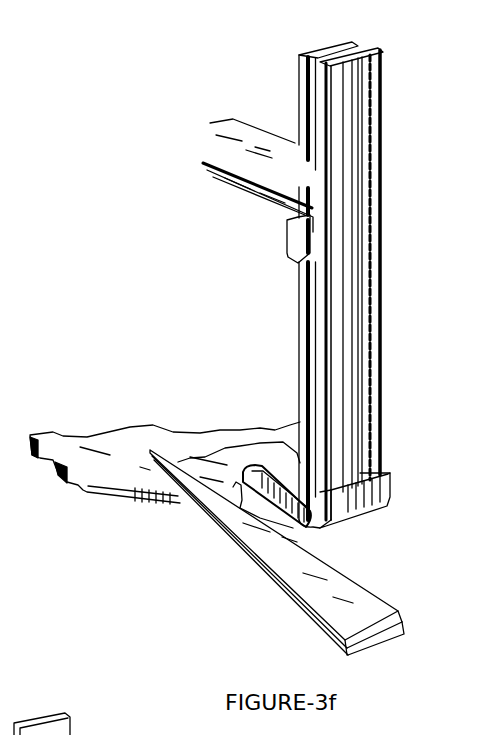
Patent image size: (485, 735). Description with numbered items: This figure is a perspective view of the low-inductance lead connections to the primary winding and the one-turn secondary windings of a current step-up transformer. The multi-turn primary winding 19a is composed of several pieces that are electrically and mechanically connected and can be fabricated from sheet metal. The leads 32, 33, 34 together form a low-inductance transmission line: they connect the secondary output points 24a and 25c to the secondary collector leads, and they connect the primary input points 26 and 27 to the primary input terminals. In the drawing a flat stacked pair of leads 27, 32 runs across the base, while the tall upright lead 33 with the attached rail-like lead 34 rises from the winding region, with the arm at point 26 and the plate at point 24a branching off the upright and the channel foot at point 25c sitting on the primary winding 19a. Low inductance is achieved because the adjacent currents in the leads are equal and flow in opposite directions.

The primary multi-turn winding 19a is at (170, 464).
The output point 24a is at (252, 127).
The output point 25c is at (352, 523).
The primary input point 26 is at (270, 203).
The primary input point 27 is at (298, 603).
The lead 32 is at (373, 603).
The lead 33 is at (365, 150).
The lead 34 is at (313, 50).